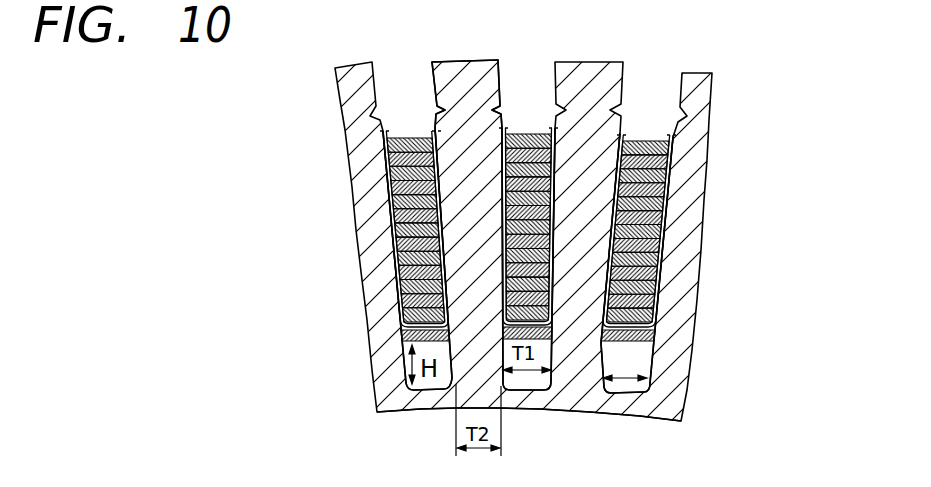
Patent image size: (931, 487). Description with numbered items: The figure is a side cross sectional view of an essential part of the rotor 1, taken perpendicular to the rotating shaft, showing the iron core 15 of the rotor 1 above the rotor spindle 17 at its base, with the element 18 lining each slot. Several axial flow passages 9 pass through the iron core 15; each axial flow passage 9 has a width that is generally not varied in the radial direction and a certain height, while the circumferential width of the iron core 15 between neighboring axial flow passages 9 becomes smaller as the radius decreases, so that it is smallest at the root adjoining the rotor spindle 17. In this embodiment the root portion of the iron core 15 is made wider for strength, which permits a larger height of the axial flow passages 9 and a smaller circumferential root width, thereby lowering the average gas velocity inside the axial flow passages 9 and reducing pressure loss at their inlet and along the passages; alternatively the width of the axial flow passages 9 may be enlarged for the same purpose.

The rotor 1 is at (735, 226).
The axial flow passage 9 is at (627, 363).
The iron core 15 is at (465, 120).
The rotor spindle 17 is at (622, 408).
The slot insulator 18 is at (528, 227).